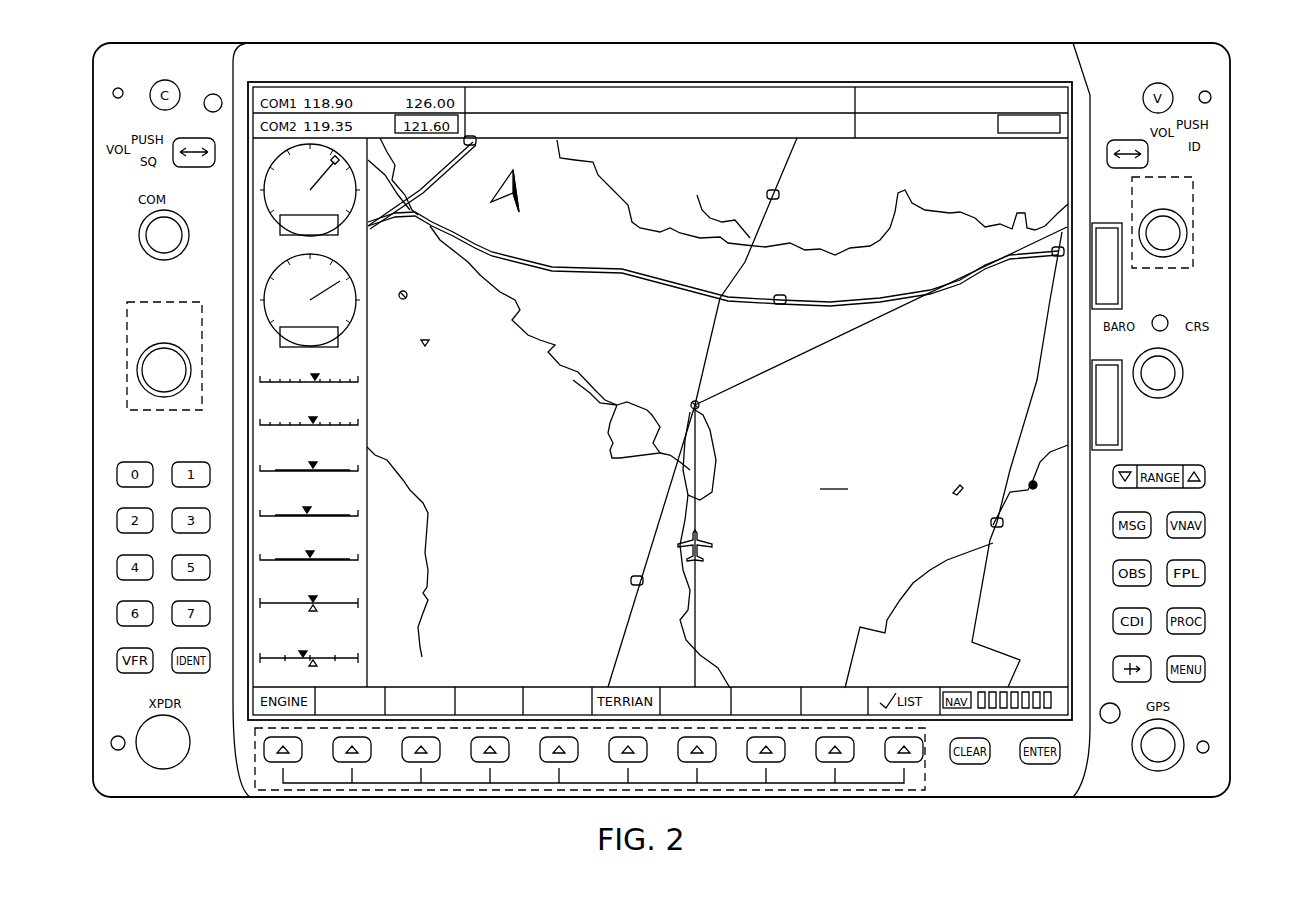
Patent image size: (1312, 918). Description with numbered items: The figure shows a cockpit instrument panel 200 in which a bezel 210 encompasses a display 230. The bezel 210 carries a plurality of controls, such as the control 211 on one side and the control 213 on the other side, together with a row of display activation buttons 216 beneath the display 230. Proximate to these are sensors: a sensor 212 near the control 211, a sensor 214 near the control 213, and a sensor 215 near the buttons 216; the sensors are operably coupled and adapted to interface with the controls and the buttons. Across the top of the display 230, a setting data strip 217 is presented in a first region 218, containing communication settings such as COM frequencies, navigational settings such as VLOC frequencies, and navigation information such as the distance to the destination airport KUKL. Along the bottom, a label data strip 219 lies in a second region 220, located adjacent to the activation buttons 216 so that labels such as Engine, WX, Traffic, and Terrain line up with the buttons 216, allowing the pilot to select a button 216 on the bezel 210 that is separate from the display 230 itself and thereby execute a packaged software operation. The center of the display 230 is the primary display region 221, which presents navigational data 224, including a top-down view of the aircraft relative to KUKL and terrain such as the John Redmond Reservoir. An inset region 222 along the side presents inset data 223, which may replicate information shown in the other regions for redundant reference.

The cockpit instrument panel 200 is at (1022, 806).
The bezel 210 is at (855, 43).
The control 211 is at (1163, 233).
The sensor 212 is at (1165, 269).
The control 213 is at (157, 378).
The sensor 214 is at (157, 301).
The sensor 215 is at (270, 781).
The display activation buttons 216 is at (455, 783).
The setting data strip 217 is at (553, 91).
The first region 218 is at (557, 143).
The label data strip 219 is at (502, 686).
The second region 220 is at (564, 686).
The primary display region 221 is at (835, 479).
The inset region 222 is at (368, 411).
The inset data 223 is at (350, 377).
The navigational data 224 is at (614, 458).
The display 230 is at (1015, 83).